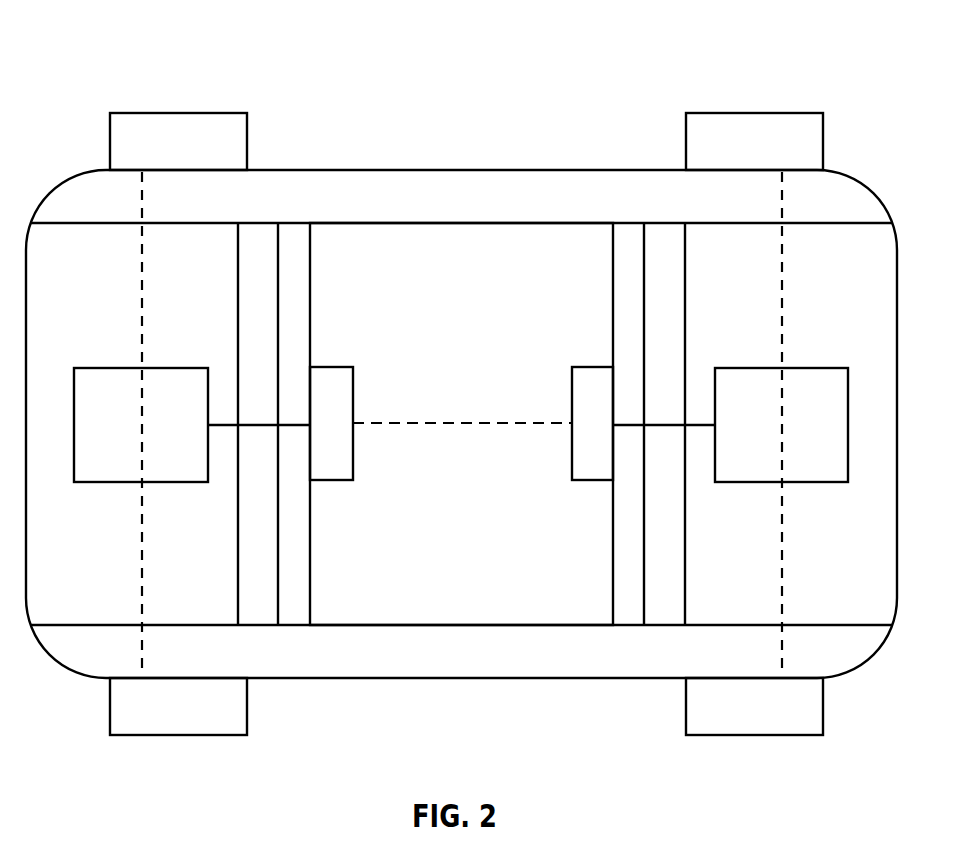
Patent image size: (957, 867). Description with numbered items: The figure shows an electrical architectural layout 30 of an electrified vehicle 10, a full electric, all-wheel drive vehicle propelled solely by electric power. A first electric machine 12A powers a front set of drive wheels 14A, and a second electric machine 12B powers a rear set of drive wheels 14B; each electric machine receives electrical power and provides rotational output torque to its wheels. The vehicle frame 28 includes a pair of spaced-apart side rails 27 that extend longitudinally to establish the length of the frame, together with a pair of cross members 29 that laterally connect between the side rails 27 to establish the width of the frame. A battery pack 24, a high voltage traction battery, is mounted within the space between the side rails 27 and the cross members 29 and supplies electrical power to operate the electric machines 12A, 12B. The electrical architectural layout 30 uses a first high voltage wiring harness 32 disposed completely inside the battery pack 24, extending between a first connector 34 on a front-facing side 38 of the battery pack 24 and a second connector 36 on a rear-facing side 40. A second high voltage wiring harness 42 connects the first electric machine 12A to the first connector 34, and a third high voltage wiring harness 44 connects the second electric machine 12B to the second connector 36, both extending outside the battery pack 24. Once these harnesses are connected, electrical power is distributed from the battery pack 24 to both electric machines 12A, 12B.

The electrified vehicle 10 is at (100, 27).
The first electric machine 12A is at (115, 366).
The second electric machine 12B is at (796, 366).
The front set of drive wheels 14A is at (180, 112).
The rear set of drive wheels 14B is at (752, 112).
The battery pack 24 is at (549, 222).
The side rails 27 is at (396, 181).
The vehicle frame 28 is at (314, 690).
The cross members 29 is at (252, 271).
The electrical architectural layout 30 is at (300, 212).
The first high voltage wiring harness 32 is at (470, 432).
The first connector 34 is at (330, 366).
The second connector 36 is at (593, 366).
The front-facing side 38 is at (290, 571).
The rear-facing side 40 is at (638, 569).
The second high voltage wiring harness 42 is at (230, 426).
The third high voltage wiring harness 44 is at (690, 426).